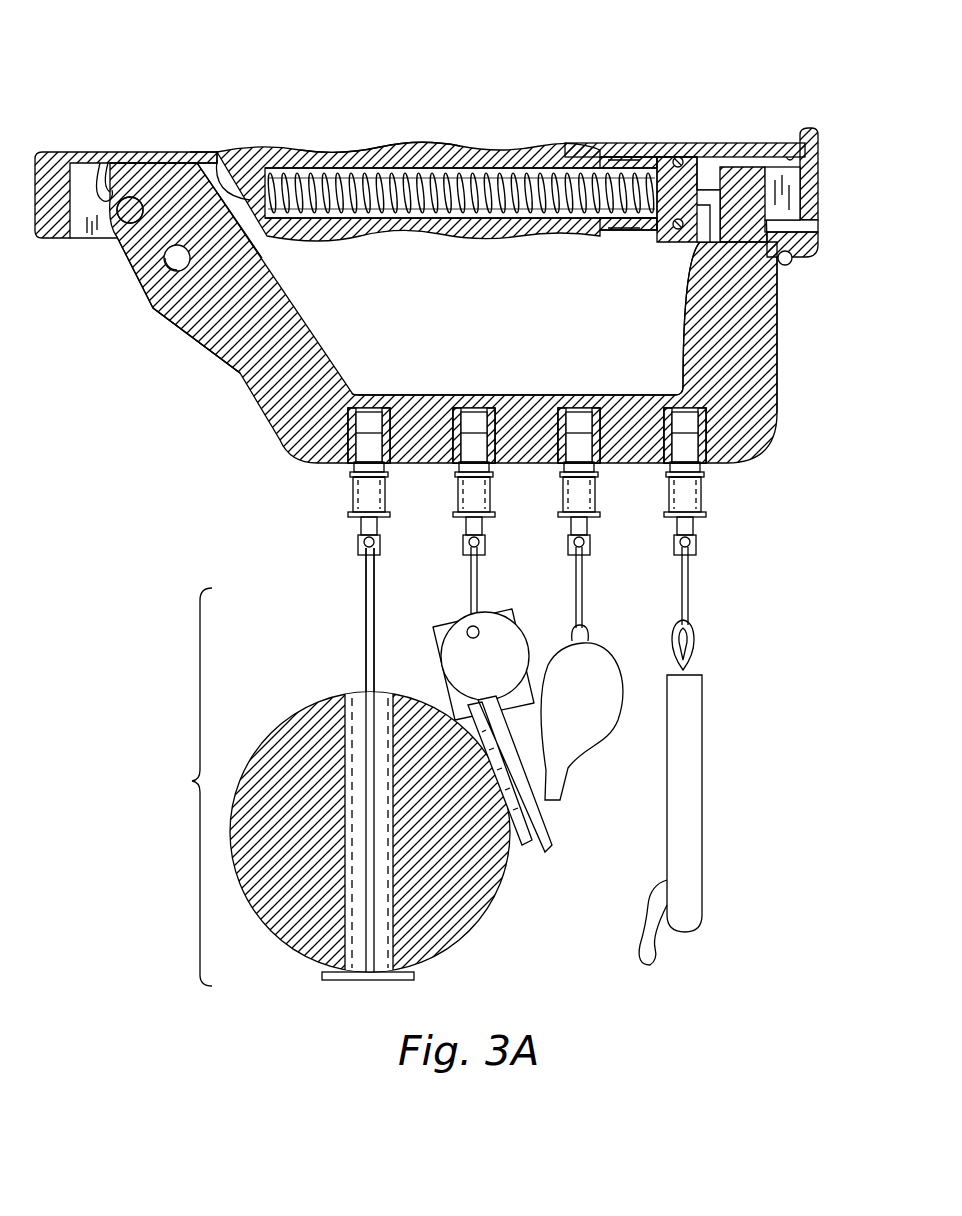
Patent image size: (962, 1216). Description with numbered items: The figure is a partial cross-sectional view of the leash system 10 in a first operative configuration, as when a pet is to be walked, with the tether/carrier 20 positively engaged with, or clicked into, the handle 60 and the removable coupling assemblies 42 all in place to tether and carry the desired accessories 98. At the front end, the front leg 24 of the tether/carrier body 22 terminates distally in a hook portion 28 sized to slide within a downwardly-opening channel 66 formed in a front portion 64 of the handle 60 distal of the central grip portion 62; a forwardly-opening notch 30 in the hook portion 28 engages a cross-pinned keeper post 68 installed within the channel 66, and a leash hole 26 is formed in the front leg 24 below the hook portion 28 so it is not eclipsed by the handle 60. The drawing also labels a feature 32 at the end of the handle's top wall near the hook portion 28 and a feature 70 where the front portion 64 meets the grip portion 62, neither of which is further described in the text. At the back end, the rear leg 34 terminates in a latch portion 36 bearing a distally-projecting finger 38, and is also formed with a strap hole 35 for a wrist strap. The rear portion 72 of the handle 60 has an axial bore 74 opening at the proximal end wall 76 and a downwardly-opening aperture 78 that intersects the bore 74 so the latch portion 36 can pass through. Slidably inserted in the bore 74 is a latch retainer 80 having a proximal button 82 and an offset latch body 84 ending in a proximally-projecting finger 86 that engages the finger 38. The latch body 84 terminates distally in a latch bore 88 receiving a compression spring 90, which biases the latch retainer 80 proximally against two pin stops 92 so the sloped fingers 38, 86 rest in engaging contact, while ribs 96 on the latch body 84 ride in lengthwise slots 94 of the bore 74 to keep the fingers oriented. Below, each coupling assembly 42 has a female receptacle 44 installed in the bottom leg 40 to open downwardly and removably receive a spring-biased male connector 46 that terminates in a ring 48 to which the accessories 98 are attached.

The leash system 10 is at (240, 76).
The tether/carrier 20 is at (208, 396).
The tether/carrier body 22 is at (185, 350).
The front leg 24 is at (162, 322).
The leash hole 26 is at (165, 266).
The hook portion 28 is at (163, 160).
The notch 30 is at (115, 235).
The end of top plate 32 is at (196, 160).
The rear leg 34 is at (780, 330).
The strap hole 35 is at (792, 265).
The latch portion 36 is at (743, 167).
The distally-projecting finger 38 is at (707, 167).
The bottom leg 40 is at (512, 388).
The removable coupling assembly 42 is at (340, 507).
The female receptacle 44 is at (445, 407).
The male connector 46 is at (466, 492).
The ring 48 is at (465, 565).
The handle 60 is at (517, 107).
The grip portion 62 is at (425, 142).
The front portion 64 is at (94, 132).
The channel 66 is at (75, 235).
The keeper post 68 is at (112, 160).
The pivot joint 70 is at (217, 153).
The rear portion 72 is at (766, 125).
The axial bore 74 is at (812, 163).
The proximal end wall 76 is at (813, 242).
The aperture 78 is at (697, 242).
The latch retainer 80 is at (640, 233).
The button 82 is at (815, 190).
The latch body 84 is at (655, 160).
The proximally-projecting finger 86 is at (667, 157).
The latch bore 88 is at (606, 162).
The compression spring 90 is at (428, 213).
The pin stop 92 is at (680, 157).
The lengthwise slot 94 is at (790, 160).
The rib 96 is at (613, 158).
The accessories 98 is at (428, 767).